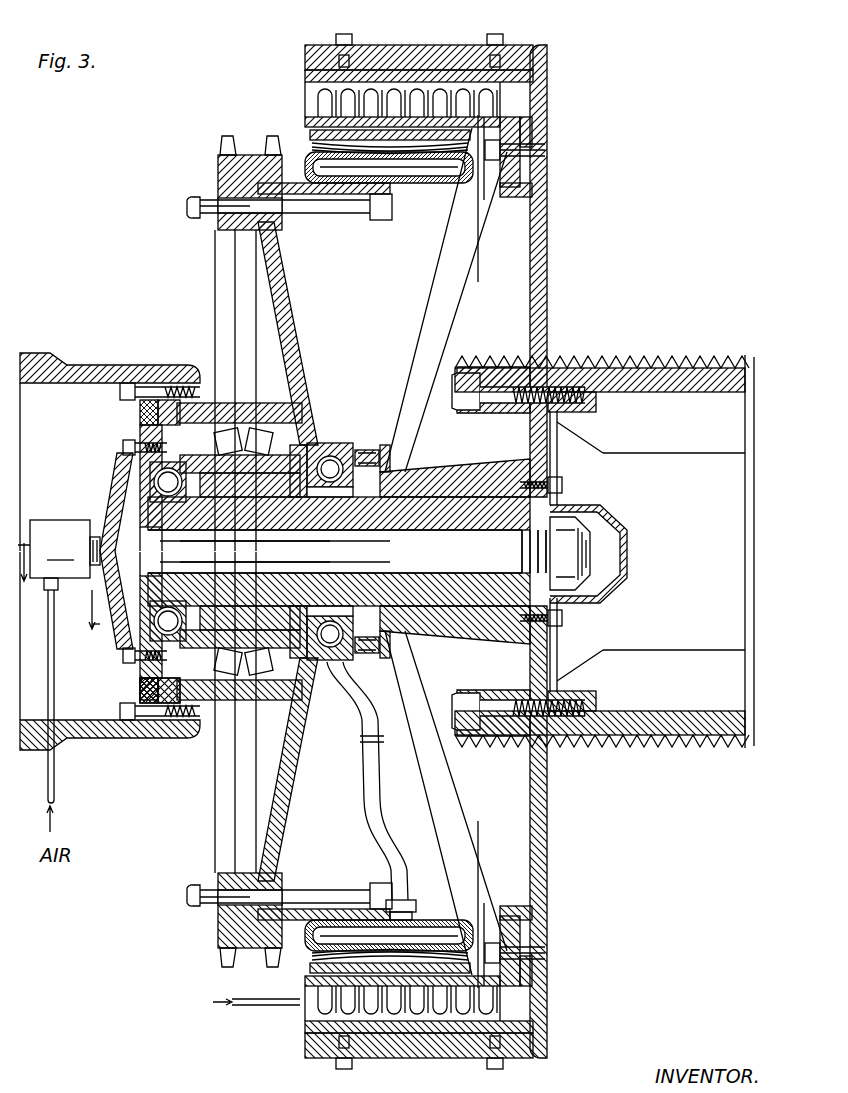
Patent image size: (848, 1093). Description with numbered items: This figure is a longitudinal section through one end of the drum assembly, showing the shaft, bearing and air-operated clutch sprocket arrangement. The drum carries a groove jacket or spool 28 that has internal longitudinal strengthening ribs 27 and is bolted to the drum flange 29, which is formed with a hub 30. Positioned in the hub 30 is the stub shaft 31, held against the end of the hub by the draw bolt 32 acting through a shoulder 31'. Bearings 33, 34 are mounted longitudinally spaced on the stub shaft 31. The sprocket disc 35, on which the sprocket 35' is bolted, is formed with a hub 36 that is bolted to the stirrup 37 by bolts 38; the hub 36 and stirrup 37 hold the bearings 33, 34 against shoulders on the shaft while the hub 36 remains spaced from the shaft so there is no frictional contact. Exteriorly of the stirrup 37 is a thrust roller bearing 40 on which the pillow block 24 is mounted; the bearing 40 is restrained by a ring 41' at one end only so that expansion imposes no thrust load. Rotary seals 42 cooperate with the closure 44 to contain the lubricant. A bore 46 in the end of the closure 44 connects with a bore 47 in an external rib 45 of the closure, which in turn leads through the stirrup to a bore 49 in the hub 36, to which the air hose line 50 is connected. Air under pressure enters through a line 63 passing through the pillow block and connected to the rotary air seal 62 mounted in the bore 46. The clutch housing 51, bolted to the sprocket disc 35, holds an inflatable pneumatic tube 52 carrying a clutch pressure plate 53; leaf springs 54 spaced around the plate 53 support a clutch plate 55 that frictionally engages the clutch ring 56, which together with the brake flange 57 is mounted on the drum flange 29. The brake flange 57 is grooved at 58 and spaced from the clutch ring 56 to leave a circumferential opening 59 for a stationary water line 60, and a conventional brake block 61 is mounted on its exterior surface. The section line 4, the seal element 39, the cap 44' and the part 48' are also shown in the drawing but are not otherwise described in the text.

The section line 4- 4 is at (55, 596).
The pillow block 24 is at (98, 365).
The internal longitudinal strengthening ribs 27 is at (684, 447).
The groove jacket or spool 28 is at (744, 345).
The drum flange 29 is at (548, 330).
The hub 30 is at (483, 470).
The stub shaft 31 is at (566, 488).
The shoulder 31' is at (514, 630).
The draw bolt 32 is at (600, 550).
The bearing 33 is at (155, 478).
The bearing 34 is at (333, 456).
The sprocket disc 35 is at (292, 551).
The sprocket 35' is at (277, 551).
The hub 36 is at (350, 420).
The stirrup 37 is at (140, 432).
The bolts 38 is at (123, 447).
The seal 39 is at (140, 408).
The thrust roller bearing 40 is at (265, 405).
The ring 41' is at (162, 736).
The rotary seals 42 is at (310, 418).
The closure 44 is at (91, 551).
The cap 44' is at (609, 548).
The external rib 45 is at (148, 637).
The bore 46 is at (105, 520).
The bore 47 is at (92, 629).
The housing part 48' is at (150, 722).
The bore 49 is at (322, 705).
The air hose line 50 is at (352, 703).
The housing 51 is at (428, 182).
The inflatable pneumatic tube 52 is at (462, 188).
The clutch pressure plate 53 is at (532, 120).
The leaf springs 54 is at (315, 147).
The clutch plate 55 is at (310, 132).
The clutch ring 56 is at (545, 78).
The brake flange 57 is at (540, 52).
The groove 58 is at (318, 80).
The circumferential opening 59 is at (346, 103).
The stationary water line 60 is at (228, 998).
The brake block 61 is at (410, 30).
The rotary air seal 62 is at (60, 555).
The line 63 is at (55, 778).